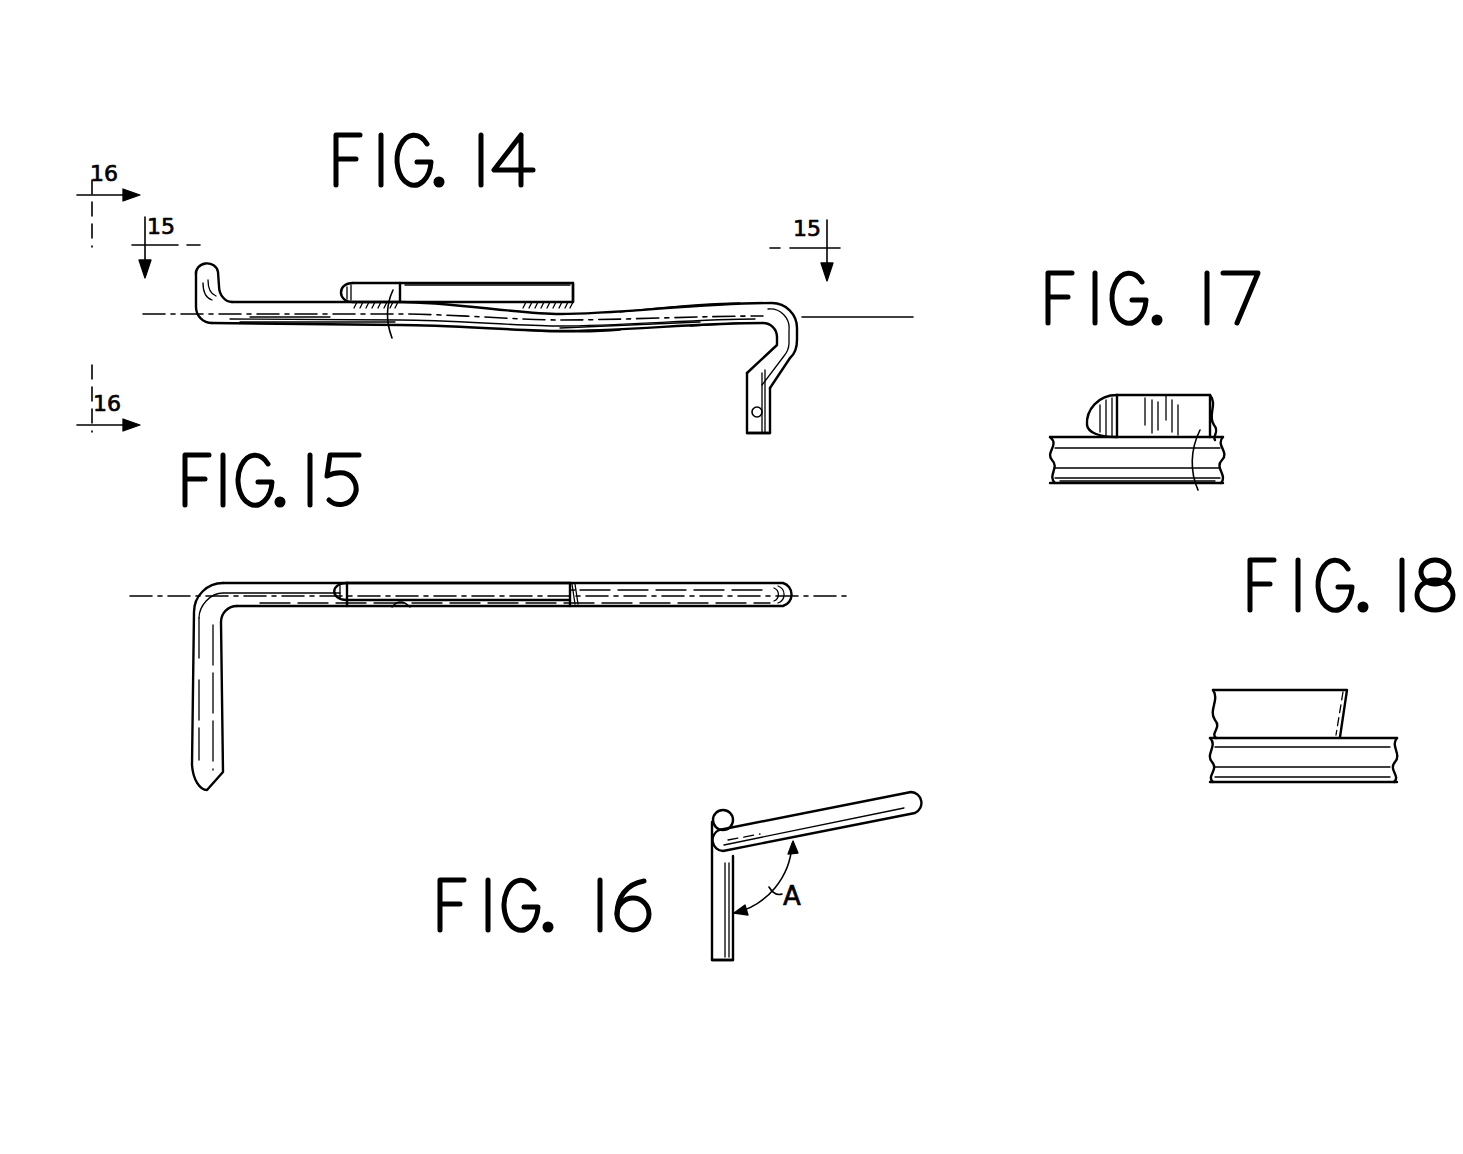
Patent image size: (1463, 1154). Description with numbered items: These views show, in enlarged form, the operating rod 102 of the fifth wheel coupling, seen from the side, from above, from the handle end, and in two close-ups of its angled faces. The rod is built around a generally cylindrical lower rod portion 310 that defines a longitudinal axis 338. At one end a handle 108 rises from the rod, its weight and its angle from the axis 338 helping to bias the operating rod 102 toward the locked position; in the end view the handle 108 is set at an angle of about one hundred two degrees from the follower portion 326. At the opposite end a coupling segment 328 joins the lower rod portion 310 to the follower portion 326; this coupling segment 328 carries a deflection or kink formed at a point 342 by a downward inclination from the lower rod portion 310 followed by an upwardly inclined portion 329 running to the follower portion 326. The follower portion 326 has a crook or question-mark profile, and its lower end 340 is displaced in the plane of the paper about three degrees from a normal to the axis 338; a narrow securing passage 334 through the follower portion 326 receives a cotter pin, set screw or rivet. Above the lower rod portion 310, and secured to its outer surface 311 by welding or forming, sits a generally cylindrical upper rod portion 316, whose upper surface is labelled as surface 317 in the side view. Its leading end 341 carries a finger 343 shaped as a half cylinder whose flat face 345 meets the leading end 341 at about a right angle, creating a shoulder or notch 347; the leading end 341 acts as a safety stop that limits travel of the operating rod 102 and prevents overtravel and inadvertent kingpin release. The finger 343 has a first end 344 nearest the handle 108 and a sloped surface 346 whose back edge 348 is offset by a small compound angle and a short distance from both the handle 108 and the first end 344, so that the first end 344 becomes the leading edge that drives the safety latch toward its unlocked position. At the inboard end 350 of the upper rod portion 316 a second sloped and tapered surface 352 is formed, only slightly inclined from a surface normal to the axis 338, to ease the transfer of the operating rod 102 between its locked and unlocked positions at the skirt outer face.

In FIG. 14, the operating rod 102 is at (657, 197).
In FIG. 15, the operating rod 102 is at (543, 725).
In FIG. 16, the operating rod 102 is at (920, 958).
In FIG. 14, the handle 108 is at (195, 303).
In FIG. 15, the handle 108 is at (224, 740).
In FIG. 16, the handle 108 is at (897, 822).
In FIG. 14, the lower rod portion 310 is at (335, 328).
In FIG. 15, the lower rod portion 310 is at (507, 594).
In FIG. 17, the lower rod portion 310 is at (1173, 462).
In FIG. 18, the lower rod portion 310 is at (1293, 757).
In FIG. 14, the outer surface 311 is at (285, 330).
In FIG. 17, the outer surface 311 is at (1083, 485).
In FIG. 14, the upper rod portion 316 is at (541, 290).
In FIG. 16, the upper rod portion 316 is at (720, 810).
In FIG. 14, the clamp block 317 is at (450, 283).
In FIG. 14, the follower portion 326 is at (787, 370).
In FIG. 16, the follower portion 326 is at (718, 943).
In FIG. 14, the coupling segment 328 is at (590, 333).
In FIG. 14, the bend portion 329 is at (710, 328).
In FIG. 14, the securing passage 334 is at (752, 411).
In FIG. 14, the longitudinal axis 338 is at (852, 318).
In FIG. 15, the longitudinal axis 338 is at (825, 598).
In FIG. 14, the lower end 340 is at (760, 435).
In FIG. 16, the lower end 340 is at (723, 961).
In FIG. 14, the leading end 341 is at (395, 336).
In FIG. 15, the leading end 341 is at (398, 607).
In FIG. 17, the leading end 341 is at (1198, 490).
In FIG. 14, the point 342 is at (652, 310).
In FIG. 15, the finger 343 is at (388, 583).
In FIG. 17, the finger 343 is at (1183, 390).
In FIG. 14, the first end 344 is at (342, 296).
In FIG. 15, the first end 344 is at (338, 586).
In FIG. 17, the first end 344 is at (1087, 415).
In FIG. 15, the face 345 is at (374, 607).
In FIG. 17, the face 345 is at (1135, 425).
In FIG. 14, the sloped surface 346 is at (350, 284).
In FIG. 15, the sloped surface 346 is at (334, 588).
In FIG. 17, the sloped surface 346 is at (1102, 417).
In FIG. 15, the notch 347 is at (412, 607).
In FIG. 14, the back edge 348 is at (360, 282).
In FIG. 15, the back edge 348 is at (347, 606).
In FIG. 17, the back edge 348 is at (1123, 417).
In FIG. 14, the inboard end 350 is at (576, 285).
In FIG. 15, the inboard end 350 is at (569, 608).
In FIG. 18, the inboard end 350 is at (1348, 692).
In FIG. 14, the tapered surface 352 is at (578, 299).
In FIG. 15, the tapered surface 352 is at (572, 586).
In FIG. 18, the tapered surface 352 is at (1348, 713).